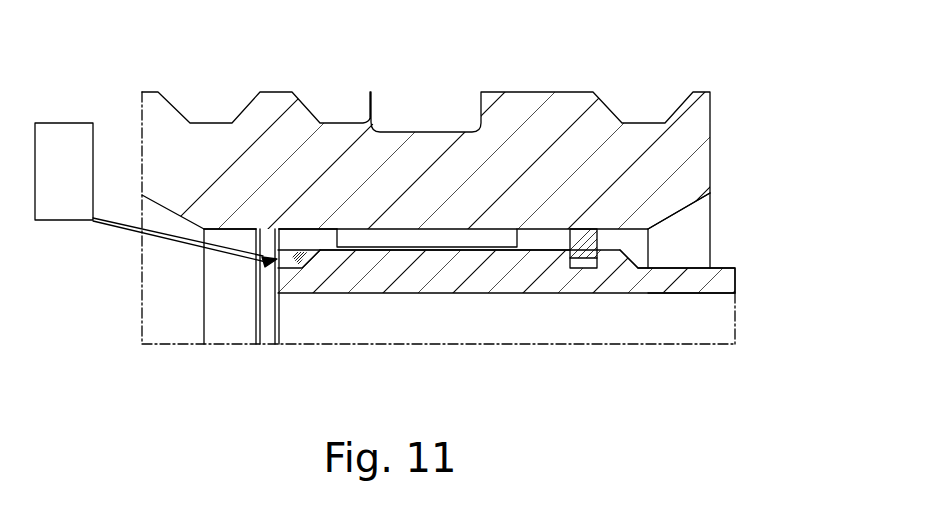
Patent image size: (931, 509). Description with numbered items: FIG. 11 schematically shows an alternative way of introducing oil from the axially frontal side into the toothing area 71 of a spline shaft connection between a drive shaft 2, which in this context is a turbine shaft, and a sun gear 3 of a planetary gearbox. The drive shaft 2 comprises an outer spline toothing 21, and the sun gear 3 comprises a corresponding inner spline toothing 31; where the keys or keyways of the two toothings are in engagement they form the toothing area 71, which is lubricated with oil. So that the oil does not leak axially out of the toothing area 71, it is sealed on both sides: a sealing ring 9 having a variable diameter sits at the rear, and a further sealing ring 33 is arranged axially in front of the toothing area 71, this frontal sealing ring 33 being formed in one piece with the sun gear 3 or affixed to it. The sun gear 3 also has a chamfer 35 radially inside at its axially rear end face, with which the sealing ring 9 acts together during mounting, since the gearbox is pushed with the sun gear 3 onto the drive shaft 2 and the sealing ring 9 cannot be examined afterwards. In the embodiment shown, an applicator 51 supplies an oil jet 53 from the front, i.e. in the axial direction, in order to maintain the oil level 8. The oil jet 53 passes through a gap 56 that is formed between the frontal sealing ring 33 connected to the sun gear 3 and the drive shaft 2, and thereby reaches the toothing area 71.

The drive shaft 2 is at (680, 285).
The sun gear 3 is at (575, 108).
The oil level 8 is at (326, 238).
The sealing ring 9 is at (588, 257).
The outer spline toothing 21 is at (506, 258).
The inner spline toothing 31 is at (453, 237).
The further sealing ring 33 is at (267, 233).
The chamfer 35 is at (702, 197).
The applicator 51 is at (67, 221).
The oil jet 53 is at (131, 236).
The gap 56 is at (256, 270).
The toothing area 71 is at (381, 258).